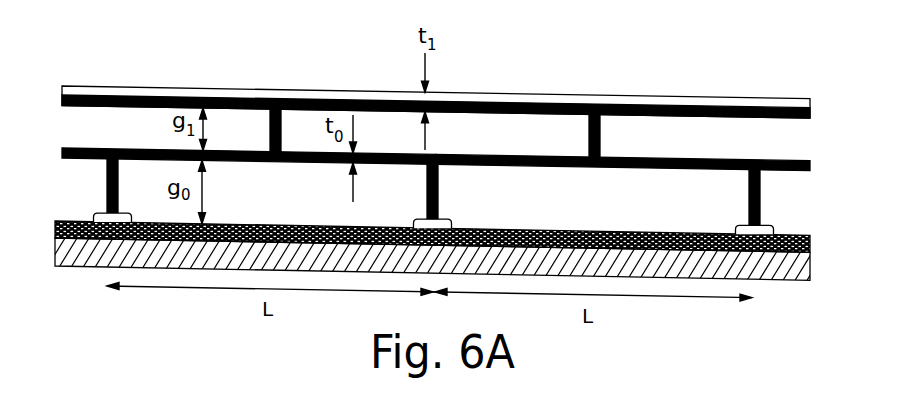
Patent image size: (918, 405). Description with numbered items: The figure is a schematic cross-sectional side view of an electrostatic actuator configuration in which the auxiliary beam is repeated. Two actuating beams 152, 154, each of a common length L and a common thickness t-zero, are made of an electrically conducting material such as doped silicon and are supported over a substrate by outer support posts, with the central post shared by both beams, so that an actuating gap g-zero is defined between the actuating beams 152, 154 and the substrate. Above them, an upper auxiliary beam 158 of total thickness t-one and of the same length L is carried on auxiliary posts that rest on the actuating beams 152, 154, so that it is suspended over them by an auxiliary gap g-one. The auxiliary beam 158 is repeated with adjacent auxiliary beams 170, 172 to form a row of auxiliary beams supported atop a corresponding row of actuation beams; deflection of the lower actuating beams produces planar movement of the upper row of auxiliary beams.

The actuating beam 152 is at (243, 161).
The actuating beam 154 is at (522, 164).
The auxiliary beam 158 is at (395, 74).
The adjacent auxiliary beam 170 is at (177, 70).
The adjacent auxiliary beam 172 is at (700, 79).